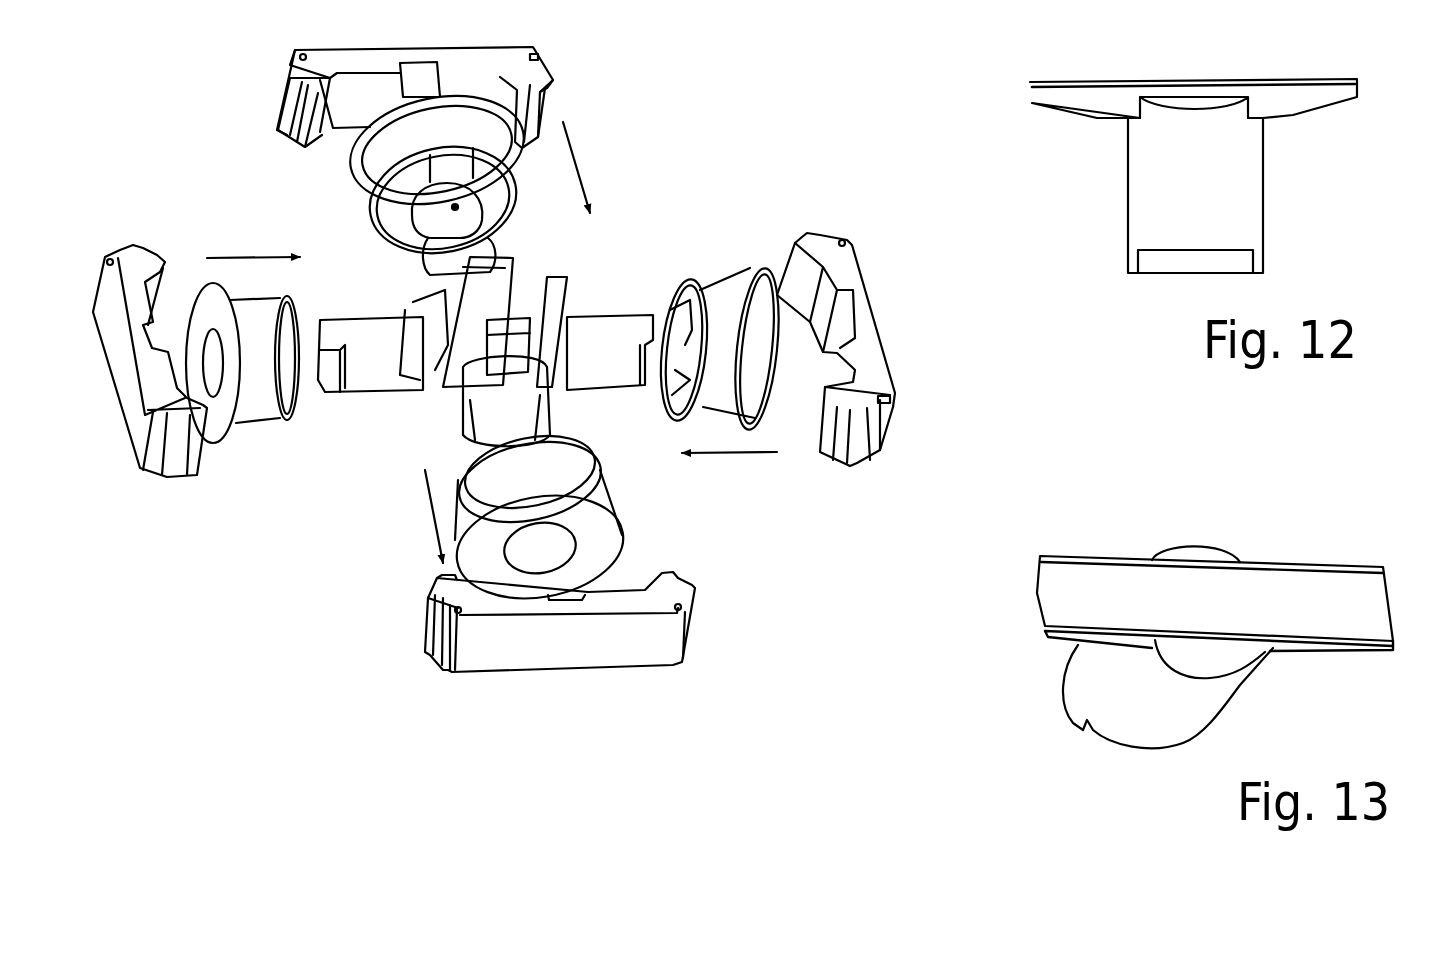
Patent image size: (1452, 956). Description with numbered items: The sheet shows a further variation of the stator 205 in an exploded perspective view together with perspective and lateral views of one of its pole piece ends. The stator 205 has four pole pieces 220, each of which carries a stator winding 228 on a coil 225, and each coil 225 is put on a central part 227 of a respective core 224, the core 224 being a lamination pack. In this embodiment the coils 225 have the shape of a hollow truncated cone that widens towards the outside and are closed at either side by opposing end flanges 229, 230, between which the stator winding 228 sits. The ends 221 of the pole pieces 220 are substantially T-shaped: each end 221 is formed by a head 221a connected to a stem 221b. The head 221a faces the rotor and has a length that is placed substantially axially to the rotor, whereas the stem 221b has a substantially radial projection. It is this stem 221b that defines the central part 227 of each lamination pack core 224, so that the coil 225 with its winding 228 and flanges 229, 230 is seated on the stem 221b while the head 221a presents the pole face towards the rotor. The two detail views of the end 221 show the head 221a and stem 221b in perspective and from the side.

In FIG. 11, the stator 205 is at (665, 148).
In FIG. 11, the pole piece 220 is at (571, 293).
In FIG. 11, the end 221 is at (471, 365).
In FIG. 12, the end 221 is at (1201, 176).
In FIG. 13, the end 221 is at (1199, 605).
In FIG. 11, the head 221a is at (413, 302).
In FIG. 12, the head 221a is at (1053, 102).
In FIG. 13, the head 221a is at (1073, 590).
In FIG. 11, the stem 221b is at (357, 370).
In FIG. 12, the stem 221b is at (1195, 195).
In FIG. 13, the stem 221b is at (1168, 647).
In FIG. 11, the core 224 is at (863, 308).
In FIG. 11, the coil 225 is at (457, 208).
In FIG. 11, the central part 227 is at (437, 260).
In FIG. 11, the stator winding 228 is at (723, 393).
In FIG. 11, the end flange 229 is at (680, 393).
In FIG. 11, the end flange 230 is at (743, 270).